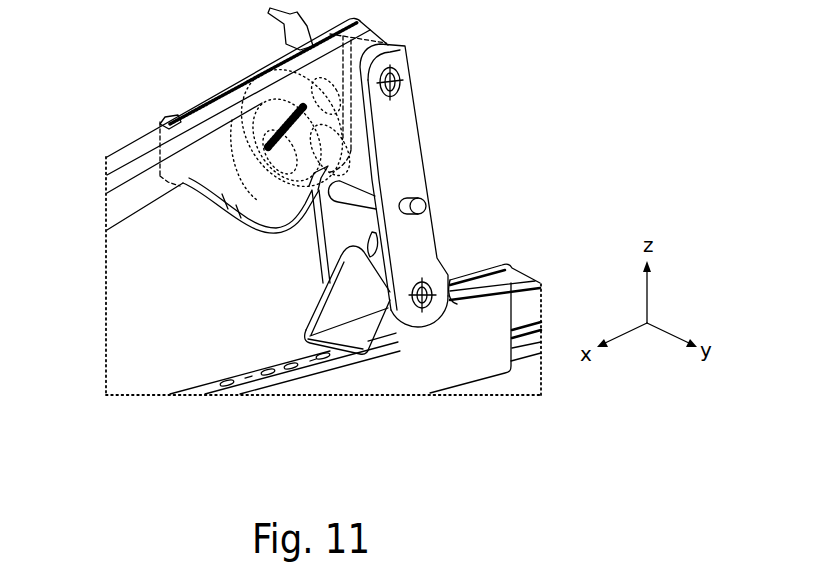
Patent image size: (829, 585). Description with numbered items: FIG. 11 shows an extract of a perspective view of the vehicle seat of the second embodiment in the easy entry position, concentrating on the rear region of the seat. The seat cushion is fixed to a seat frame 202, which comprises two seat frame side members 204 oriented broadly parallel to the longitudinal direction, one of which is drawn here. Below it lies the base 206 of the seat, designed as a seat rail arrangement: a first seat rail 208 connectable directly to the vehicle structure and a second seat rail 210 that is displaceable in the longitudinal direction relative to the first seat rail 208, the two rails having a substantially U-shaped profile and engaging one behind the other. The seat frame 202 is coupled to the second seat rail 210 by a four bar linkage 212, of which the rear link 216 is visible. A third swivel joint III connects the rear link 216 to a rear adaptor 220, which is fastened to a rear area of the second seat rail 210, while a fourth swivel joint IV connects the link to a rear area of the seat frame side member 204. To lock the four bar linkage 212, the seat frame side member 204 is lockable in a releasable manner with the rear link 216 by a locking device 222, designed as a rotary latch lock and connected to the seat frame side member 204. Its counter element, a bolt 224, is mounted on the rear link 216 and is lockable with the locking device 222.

The seat frame 202 is at (127, 151).
The seat frame side member 204 is at (273, 152).
The base 206 is at (222, 412).
The first seat rail 208 is at (455, 362).
The second seat rail 210 is at (200, 391).
The four bar linkage 212 is at (498, 142).
The rear link 216 is at (408, 135).
The rear adaptor 220 is at (337, 310).
The locking device 222 is at (281, 129).
The bolt 224 is at (427, 205).
The fourth swivel joint IV is at (397, 71).
The third swivel joint III is at (434, 294).